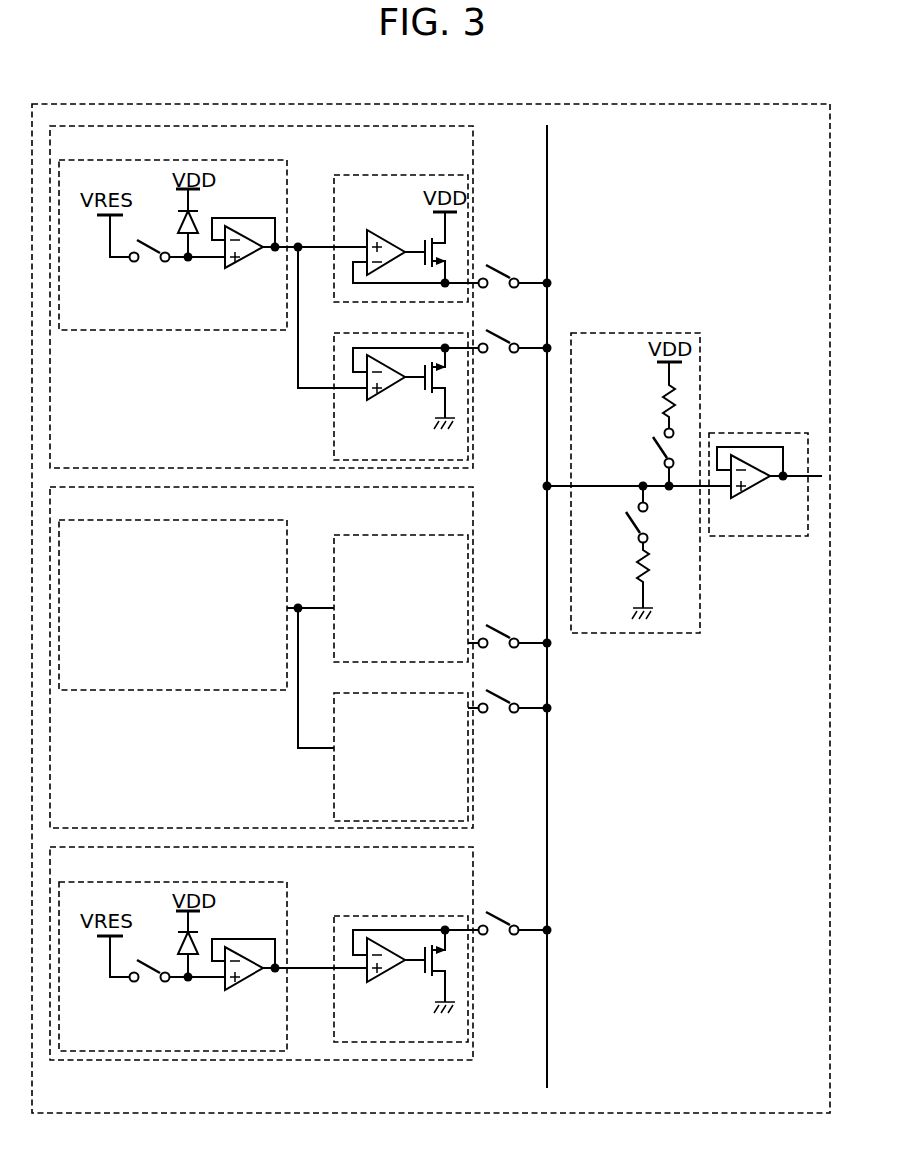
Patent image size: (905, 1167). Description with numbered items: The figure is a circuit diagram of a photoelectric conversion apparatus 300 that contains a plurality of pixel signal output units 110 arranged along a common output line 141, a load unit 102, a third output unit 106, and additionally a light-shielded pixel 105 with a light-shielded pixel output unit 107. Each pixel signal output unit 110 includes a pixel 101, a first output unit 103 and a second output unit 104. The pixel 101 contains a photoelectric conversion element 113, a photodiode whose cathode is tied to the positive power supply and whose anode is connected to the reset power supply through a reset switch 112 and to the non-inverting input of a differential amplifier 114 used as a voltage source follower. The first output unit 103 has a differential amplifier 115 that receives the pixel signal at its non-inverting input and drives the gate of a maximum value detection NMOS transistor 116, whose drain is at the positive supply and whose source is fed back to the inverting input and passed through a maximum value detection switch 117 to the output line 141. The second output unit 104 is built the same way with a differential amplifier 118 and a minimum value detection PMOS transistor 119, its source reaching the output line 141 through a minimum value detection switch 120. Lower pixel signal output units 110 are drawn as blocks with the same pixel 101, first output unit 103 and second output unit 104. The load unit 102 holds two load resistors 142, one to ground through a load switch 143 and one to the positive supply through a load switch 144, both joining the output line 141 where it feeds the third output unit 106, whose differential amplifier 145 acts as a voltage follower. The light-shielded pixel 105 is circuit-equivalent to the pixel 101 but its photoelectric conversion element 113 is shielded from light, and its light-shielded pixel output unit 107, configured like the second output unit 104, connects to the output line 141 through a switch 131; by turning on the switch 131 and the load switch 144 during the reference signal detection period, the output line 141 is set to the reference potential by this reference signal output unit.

The photoelectric conversion device 300 is at (636, 104).
The pixel signal output unit 110 is at (473, 143).
The light-shielded pixel output unit 107 is at (473, 864).
The output line 141 is at (548, 207).
The pixel 101 is at (220, 160).
The light-shielded pixel 105 is at (220, 882).
The first output unit 103 is at (380, 175).
The second output unit 104 is at (380, 333).
The load unit 102 is at (612, 333).
The third output unit 106 is at (778, 415).
The reset switch 112 is at (150, 262).
The photoelectric conversion element 113 is at (177, 227).
The differential amplifier 114 is at (248, 259).
The differential amplifier 115 is at (378, 240).
The maximum value detection NMOS transistor 116 is at (425, 242).
The maximum value detection switch 117 is at (498, 271).
The differential amplifier 118 is at (387, 390).
The minimum value detection PMOS transistor 119 is at (418, 387).
The minimum value detection switch 120 is at (495, 358).
The switch 131 is at (498, 937).
The load resistor 142 is at (658, 396).
The load switch 143 is at (635, 518).
The load switch 144 is at (658, 452).
The differential amplifier 145 is at (762, 485).